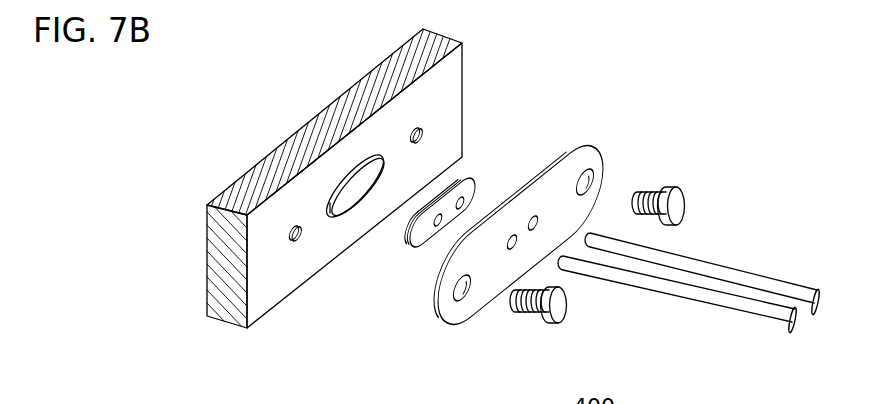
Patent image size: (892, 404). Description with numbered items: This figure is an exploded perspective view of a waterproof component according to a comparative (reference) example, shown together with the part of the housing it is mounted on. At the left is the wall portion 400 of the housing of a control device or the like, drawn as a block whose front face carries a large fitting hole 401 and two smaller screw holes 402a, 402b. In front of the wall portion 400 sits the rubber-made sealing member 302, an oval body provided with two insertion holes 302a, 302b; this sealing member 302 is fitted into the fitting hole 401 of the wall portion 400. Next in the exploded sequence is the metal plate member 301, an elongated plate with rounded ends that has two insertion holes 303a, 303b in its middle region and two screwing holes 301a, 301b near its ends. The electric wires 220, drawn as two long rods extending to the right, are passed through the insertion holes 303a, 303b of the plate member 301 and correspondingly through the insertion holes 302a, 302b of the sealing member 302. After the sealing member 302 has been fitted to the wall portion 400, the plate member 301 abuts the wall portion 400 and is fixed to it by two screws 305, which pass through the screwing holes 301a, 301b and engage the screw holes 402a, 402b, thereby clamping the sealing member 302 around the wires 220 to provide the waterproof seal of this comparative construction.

The wall portion 400 is at (275, 288).
The fitting hole 401 is at (340, 212).
The screw hole 402a is at (412, 124).
The screw hole 402b is at (291, 223).
The plate member 301 is at (603, 158).
The screwing hole 301a is at (583, 141).
The screwing hole 301b is at (462, 298).
The sealing member 302 is at (416, 233).
The insertion hole 302a is at (463, 198).
The insertion hole 302b is at (437, 226).
The insertion hole 303a is at (533, 218).
The insertion hole 303b is at (512, 250).
The screw 305 is at (567, 303).
The electric wire 220 is at (745, 286).